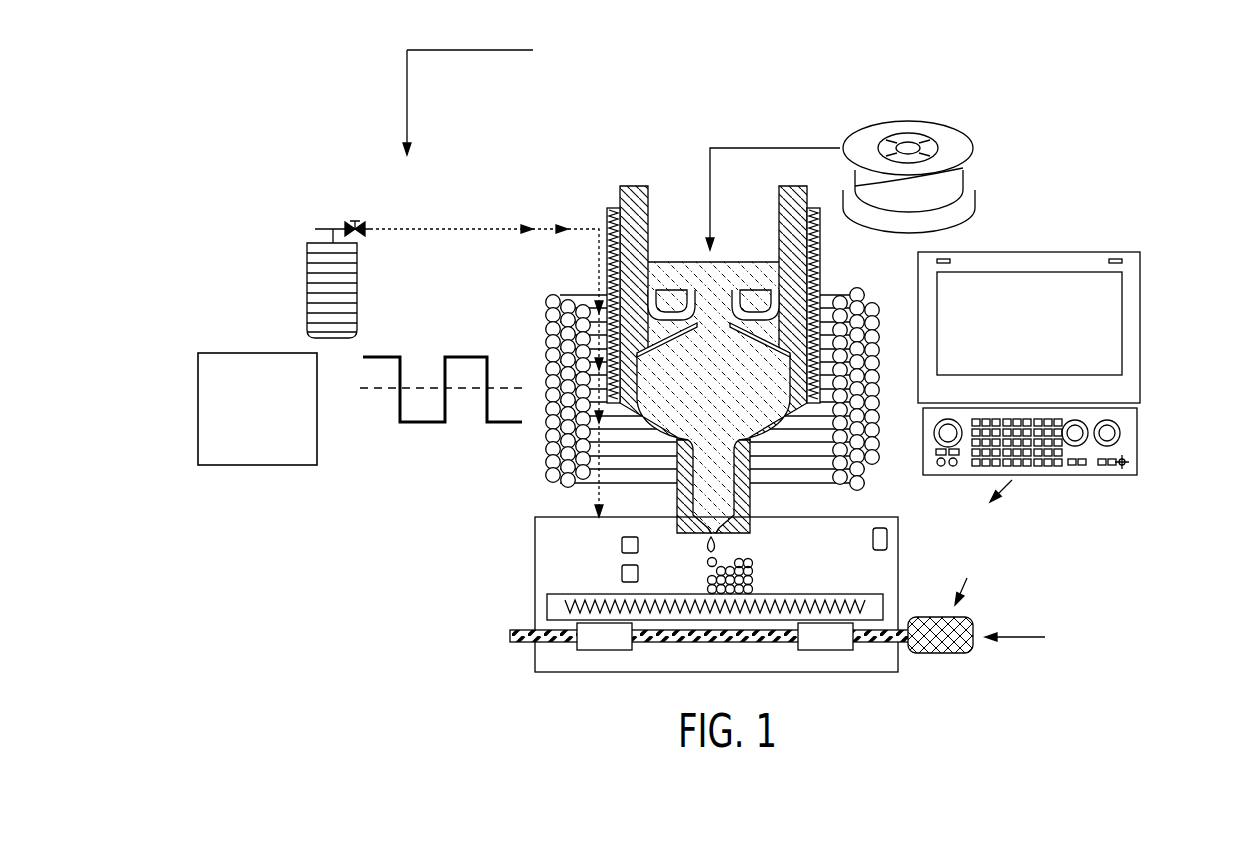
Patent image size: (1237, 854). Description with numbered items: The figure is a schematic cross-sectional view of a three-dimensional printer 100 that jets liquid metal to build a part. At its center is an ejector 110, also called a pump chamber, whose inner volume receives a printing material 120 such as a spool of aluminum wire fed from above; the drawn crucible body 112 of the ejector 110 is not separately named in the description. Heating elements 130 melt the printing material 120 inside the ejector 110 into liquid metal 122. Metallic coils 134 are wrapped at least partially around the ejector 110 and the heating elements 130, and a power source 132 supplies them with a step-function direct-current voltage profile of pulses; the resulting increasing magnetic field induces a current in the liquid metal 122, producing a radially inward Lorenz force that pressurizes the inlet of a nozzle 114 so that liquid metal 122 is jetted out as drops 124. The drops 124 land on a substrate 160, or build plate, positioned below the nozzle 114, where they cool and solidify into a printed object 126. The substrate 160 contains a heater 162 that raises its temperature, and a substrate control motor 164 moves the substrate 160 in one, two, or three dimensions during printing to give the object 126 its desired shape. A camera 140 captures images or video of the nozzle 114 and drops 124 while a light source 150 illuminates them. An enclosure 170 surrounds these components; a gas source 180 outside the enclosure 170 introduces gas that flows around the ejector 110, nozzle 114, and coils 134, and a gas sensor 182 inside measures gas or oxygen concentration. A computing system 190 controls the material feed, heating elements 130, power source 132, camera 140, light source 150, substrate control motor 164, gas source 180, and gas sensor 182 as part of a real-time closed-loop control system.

The 3D printer 100 is at (296, 121).
The ejector 110 is at (590, 171).
The crucible 112 is at (637, 198).
The nozzle 114 is at (692, 535).
The printing material 120 is at (925, 115).
The liquid metal 122 is at (705, 483).
The drops 124 is at (716, 545).
The 3D object 126 is at (750, 566).
The heating elements 130 is at (820, 265).
The power source 132 is at (268, 465).
The metallic coils 134 is at (548, 304).
The camera 140 is at (622, 547).
The light source 150 is at (622, 576).
The substrate 160 is at (547, 606).
The heater 162 is at (838, 600).
The substrate control motor 164 is at (973, 625).
The enclosure 170 is at (533, 540).
The gas source 180 is at (307, 253).
The gas sensor 182 is at (882, 528).
The computing system 190 is at (1137, 440).